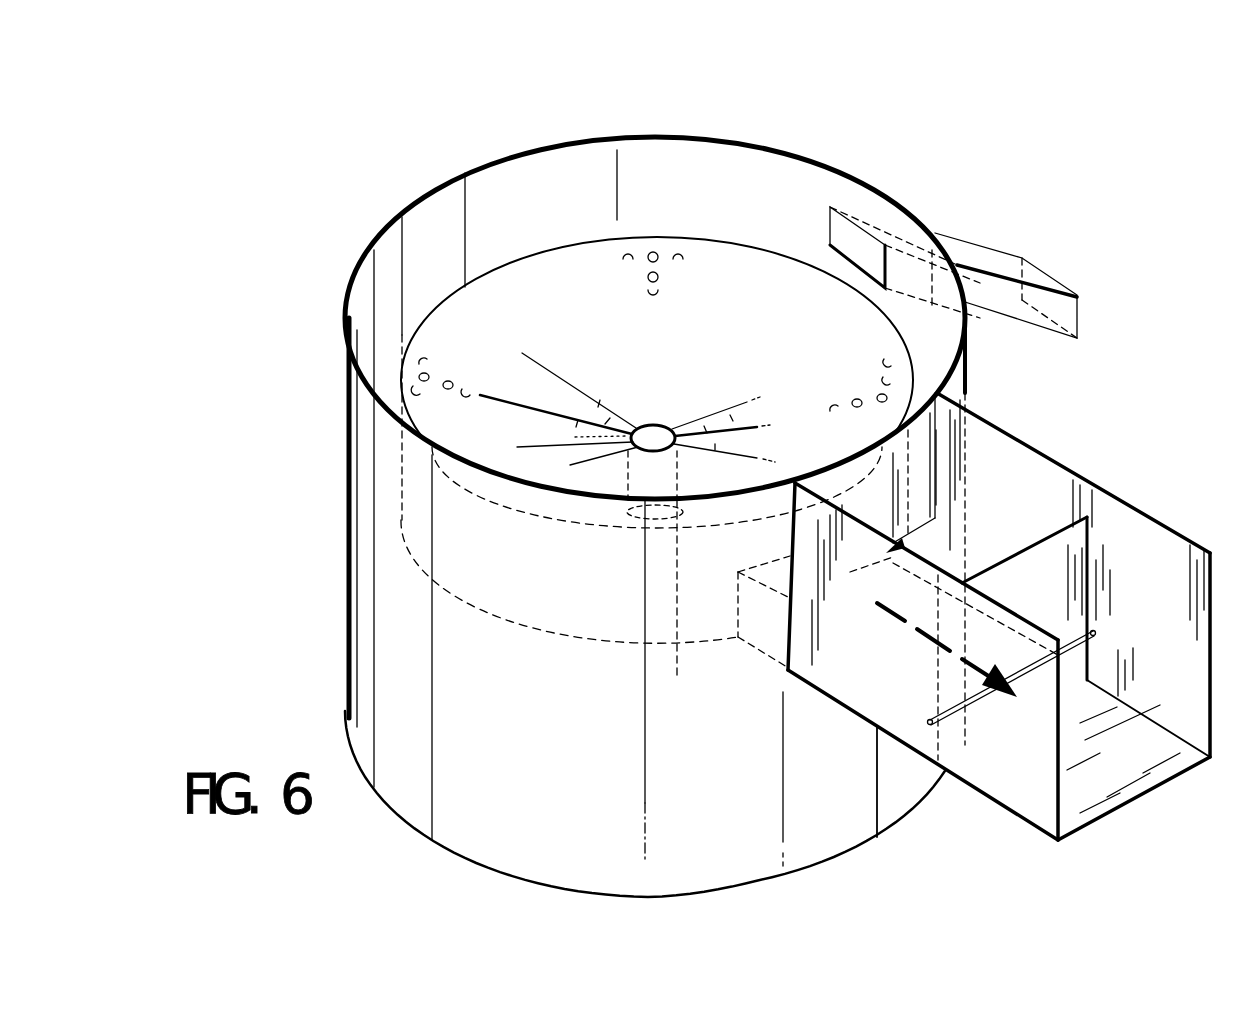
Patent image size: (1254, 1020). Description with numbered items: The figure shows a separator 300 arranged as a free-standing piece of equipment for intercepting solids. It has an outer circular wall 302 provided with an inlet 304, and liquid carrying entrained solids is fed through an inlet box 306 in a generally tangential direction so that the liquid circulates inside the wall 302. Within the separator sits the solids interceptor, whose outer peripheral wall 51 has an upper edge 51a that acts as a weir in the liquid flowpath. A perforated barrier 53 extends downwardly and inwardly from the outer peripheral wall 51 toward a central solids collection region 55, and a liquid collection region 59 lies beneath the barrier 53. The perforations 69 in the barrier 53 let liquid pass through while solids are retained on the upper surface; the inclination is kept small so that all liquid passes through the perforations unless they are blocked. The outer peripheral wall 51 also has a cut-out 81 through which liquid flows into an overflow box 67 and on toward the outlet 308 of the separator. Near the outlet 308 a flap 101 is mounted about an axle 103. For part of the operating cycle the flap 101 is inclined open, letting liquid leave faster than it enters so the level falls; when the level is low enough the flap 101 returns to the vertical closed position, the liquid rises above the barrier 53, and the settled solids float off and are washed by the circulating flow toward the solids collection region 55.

The separator 300 is at (545, 112).
The outer circular wall 302 is at (742, 136).
The inlet 304 is at (830, 206).
The inlet box 306 is at (1012, 258).
The perforated barrier 53 is at (477, 326).
The perforations 69 is at (656, 254).
The upper edge 51a is at (405, 373).
The central solids collection region 55 is at (657, 434).
The liquid collection region 59 is at (400, 504).
The outer peripheral wall 51 is at (597, 590).
The cut-out 81 is at (677, 662).
The overflow box 67 is at (1000, 501).
The flap 101 is at (1087, 548).
The axle 103 is at (975, 730).
The outlet 308 is at (1068, 845).